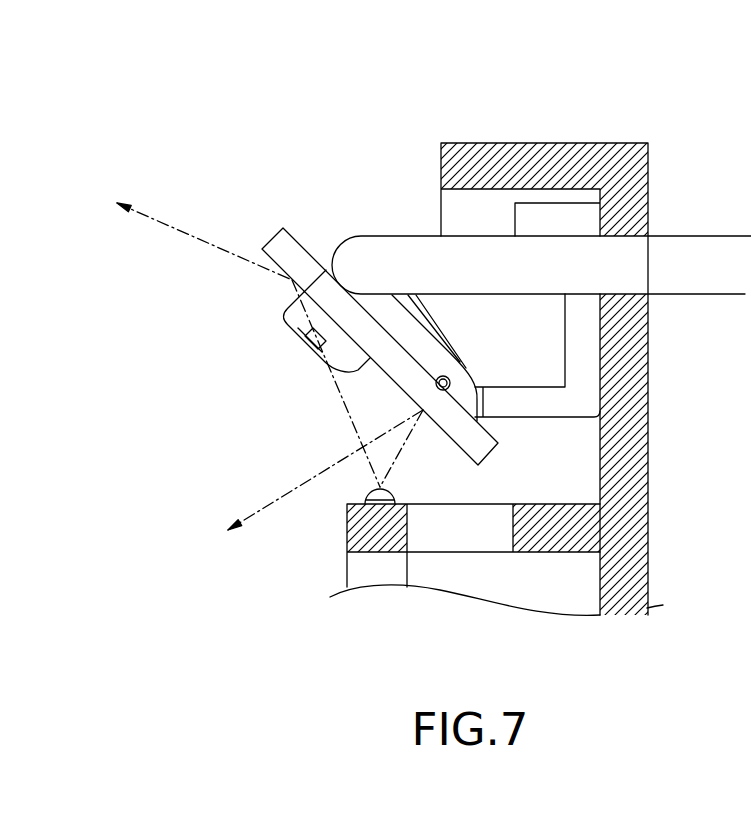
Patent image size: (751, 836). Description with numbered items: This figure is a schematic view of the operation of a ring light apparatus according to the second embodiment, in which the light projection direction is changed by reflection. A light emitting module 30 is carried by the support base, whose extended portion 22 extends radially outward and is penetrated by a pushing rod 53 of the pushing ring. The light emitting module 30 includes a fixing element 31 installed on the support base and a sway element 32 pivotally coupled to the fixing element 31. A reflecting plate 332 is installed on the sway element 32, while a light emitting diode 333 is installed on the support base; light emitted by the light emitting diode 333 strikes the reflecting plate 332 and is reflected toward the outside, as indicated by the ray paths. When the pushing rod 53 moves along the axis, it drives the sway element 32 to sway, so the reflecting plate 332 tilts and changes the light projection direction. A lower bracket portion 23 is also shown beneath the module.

The extended portion 22 is at (567, 163).
The lower bracket 23 is at (358, 530).
The light emitting module 30 is at (280, 312).
The fixing element 31 is at (543, 408).
The sway element 32 is at (415, 340).
The pushing rod 53 is at (492, 254).
The reflecting plate 332 is at (283, 249).
The light emitting diode 333 is at (363, 490).